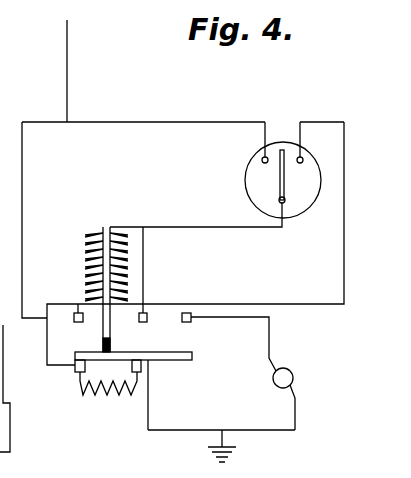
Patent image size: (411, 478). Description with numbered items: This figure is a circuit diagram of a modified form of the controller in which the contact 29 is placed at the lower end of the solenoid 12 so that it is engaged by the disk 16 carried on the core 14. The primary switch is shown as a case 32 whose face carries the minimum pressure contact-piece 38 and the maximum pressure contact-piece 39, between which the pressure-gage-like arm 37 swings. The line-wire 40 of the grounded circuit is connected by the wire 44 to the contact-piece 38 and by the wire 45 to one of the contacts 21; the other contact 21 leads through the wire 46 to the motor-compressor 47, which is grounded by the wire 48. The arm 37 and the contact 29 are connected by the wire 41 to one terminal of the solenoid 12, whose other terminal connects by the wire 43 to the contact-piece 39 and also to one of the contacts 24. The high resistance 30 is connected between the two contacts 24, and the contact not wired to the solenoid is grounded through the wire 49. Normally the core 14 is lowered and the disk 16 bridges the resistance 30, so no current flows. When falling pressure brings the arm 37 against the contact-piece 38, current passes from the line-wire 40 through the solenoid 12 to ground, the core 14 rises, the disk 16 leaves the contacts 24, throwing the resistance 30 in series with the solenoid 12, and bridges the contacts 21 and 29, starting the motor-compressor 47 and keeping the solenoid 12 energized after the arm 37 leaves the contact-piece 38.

The line-wire 40 is at (68, 83).
The wire 44 is at (150, 127).
The wire 45 is at (22, 199).
The wire 43 is at (299, 263).
The case 32 is at (295, 205).
The minimum pressure contact-piece 38 is at (262, 159).
The maximum pressure contact-piece 39 is at (303, 158).
The arm 37 is at (280, 186).
The wire 41 is at (148, 231).
The core 14 is at (110, 321).
The solenoid 12 is at (88, 262).
The contact 29 is at (148, 316).
The contacts 21 is at (193, 330).
The wire 46 is at (270, 327).
The motor-compressor 47 is at (293, 378).
The disk 16 is at (130, 352).
The contacts 24 is at (149, 372).
The high resistance 30 is at (106, 395).
The wire 49 is at (150, 406).
The wire 48 is at (221, 437).